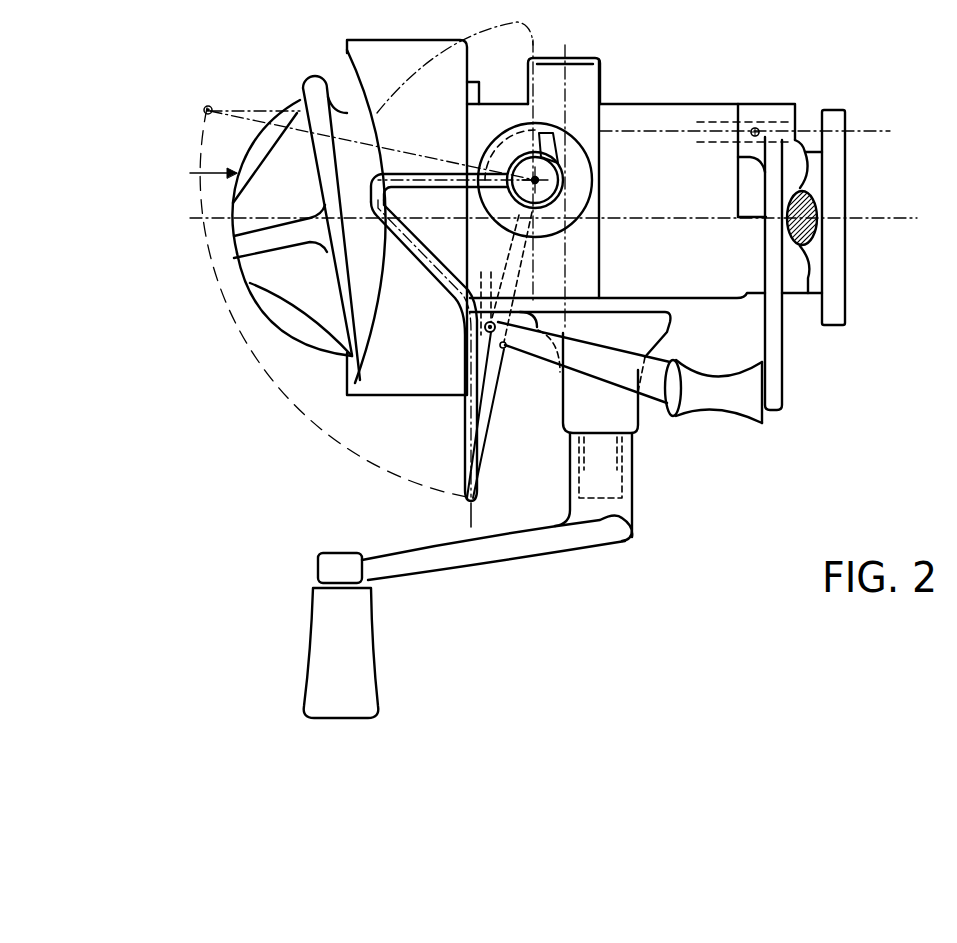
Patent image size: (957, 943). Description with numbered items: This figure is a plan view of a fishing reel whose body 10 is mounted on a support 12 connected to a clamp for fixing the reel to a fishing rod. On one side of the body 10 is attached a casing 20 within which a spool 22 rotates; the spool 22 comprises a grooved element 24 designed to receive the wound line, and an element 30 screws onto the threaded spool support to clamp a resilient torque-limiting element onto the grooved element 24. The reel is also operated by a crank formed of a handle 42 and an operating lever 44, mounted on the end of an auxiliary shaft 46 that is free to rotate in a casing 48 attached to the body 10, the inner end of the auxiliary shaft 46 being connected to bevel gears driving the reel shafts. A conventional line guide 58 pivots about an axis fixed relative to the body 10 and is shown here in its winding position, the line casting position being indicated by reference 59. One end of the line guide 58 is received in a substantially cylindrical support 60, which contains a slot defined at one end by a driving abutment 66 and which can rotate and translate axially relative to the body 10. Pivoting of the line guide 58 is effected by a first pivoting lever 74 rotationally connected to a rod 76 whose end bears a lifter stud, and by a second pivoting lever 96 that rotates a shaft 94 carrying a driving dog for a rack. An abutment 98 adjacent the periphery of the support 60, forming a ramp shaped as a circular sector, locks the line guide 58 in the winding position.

The body 10 is at (668, 118).
The support 12 is at (812, 183).
The casing 20 is at (385, 50).
The spool 22 is at (189, 172).
The grooved element 24 is at (310, 97).
The element 30 is at (300, 209).
The handle 42 is at (358, 652).
The operating lever 44 is at (522, 575).
The auxiliary shaft 46 is at (610, 460).
The casing 48 is at (580, 410).
The line guide 58 is at (443, 278).
The line casting position 59 is at (532, 33).
The cylindrical support 60 is at (555, 200).
The driving abutment 66 is at (542, 131).
The first pivoting lever 74 is at (655, 368).
The rod 76 is at (500, 348).
The shaft 94 is at (778, 128).
The second pivoting lever 96 is at (772, 377).
The abutment 98 is at (480, 157).